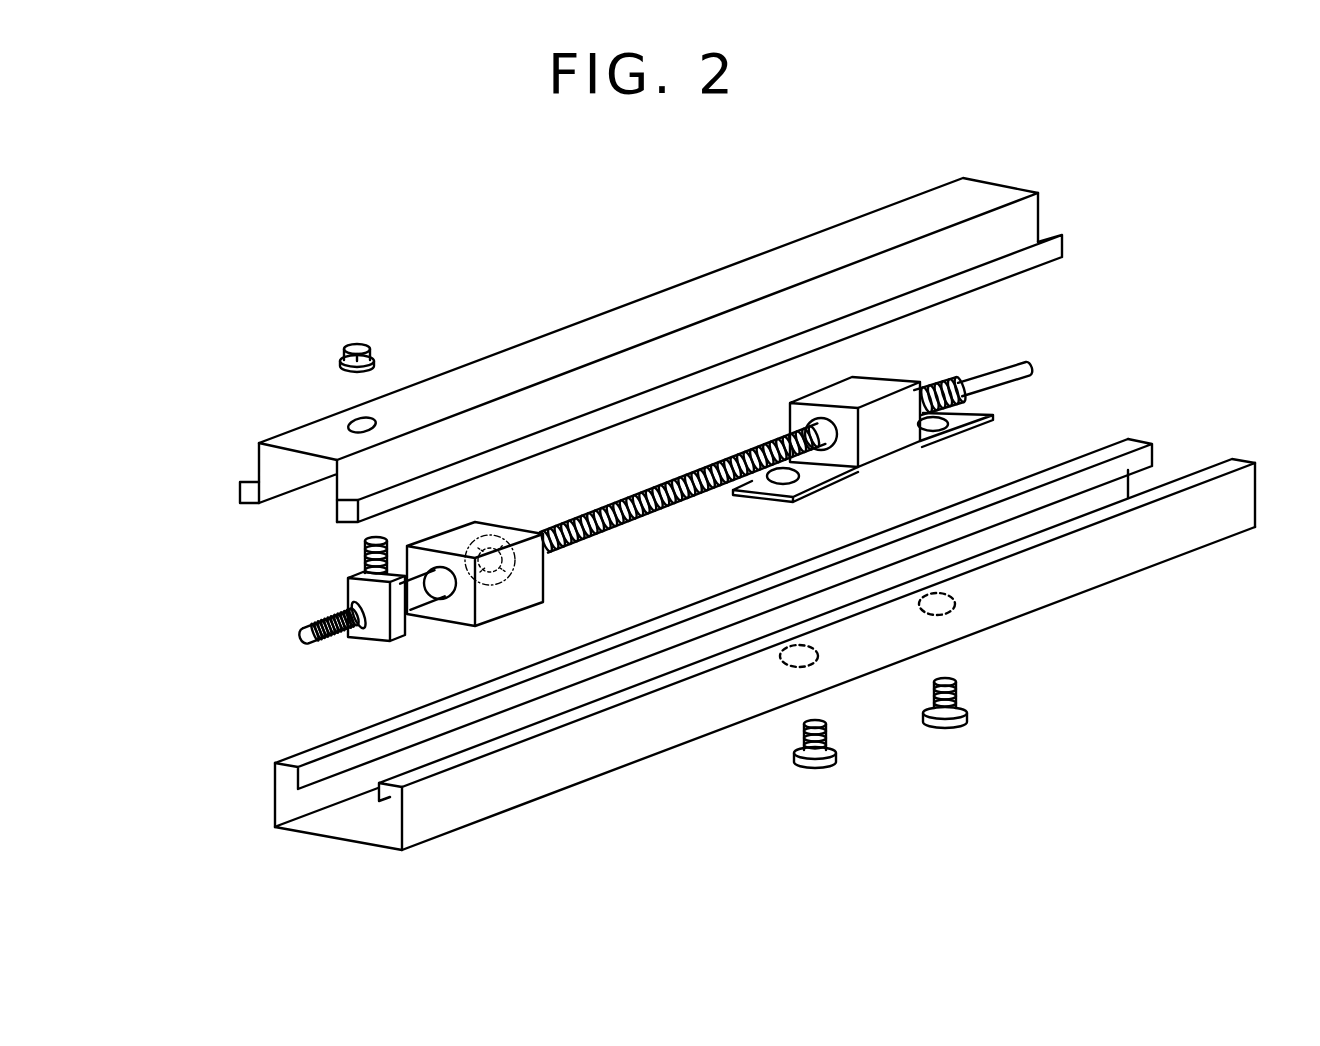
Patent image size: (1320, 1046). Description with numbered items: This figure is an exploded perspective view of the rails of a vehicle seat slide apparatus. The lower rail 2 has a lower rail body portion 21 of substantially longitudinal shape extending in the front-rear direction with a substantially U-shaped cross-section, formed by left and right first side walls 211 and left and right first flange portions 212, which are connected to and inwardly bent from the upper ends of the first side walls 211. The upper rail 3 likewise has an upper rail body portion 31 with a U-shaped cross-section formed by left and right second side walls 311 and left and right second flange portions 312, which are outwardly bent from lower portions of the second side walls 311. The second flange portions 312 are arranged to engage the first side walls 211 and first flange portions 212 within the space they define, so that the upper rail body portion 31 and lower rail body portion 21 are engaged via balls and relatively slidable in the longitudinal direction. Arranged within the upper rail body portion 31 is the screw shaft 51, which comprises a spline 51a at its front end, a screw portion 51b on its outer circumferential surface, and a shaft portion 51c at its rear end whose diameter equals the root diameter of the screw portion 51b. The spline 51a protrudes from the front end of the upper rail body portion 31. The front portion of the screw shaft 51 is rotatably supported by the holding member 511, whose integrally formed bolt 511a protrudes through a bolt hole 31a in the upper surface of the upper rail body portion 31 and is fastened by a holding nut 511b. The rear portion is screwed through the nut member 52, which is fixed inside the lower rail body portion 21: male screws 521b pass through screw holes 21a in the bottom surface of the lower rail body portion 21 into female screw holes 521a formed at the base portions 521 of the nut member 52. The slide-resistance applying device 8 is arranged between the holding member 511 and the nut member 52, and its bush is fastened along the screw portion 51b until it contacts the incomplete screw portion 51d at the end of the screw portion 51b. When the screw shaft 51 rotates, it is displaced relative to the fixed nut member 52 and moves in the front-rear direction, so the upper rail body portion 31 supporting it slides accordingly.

The lower rail 2 is at (736, 644).
The upper rail 3 is at (601, 350).
The slide-resistance applying device 8 is at (482, 597).
The lower rail body portion 21 is at (337, 693).
The screw holes 21a is at (818, 658).
The upper rail body portion 31 is at (589, 319).
The bolt hole 31a is at (366, 421).
The screw shaft 51 is at (657, 503).
The spline 51a is at (320, 620).
The screw portion 51b is at (617, 524).
The shaft portion 51c is at (1002, 378).
The incomplete screw portion 51d is at (449, 577).
The nut member 52 is at (894, 465).
The first side walls 211 is at (460, 792).
The first flange portions 212 is at (308, 786).
The second side walls 311 is at (360, 472).
The second flange portions 312 is at (340, 500).
The holding member 511 is at (341, 612).
The bolt 511a is at (362, 553).
The holding nut 511b is at (363, 343).
The base portions 521 is at (894, 483).
The female screw holes 521a is at (935, 429).
The male screws 521b is at (990, 743).